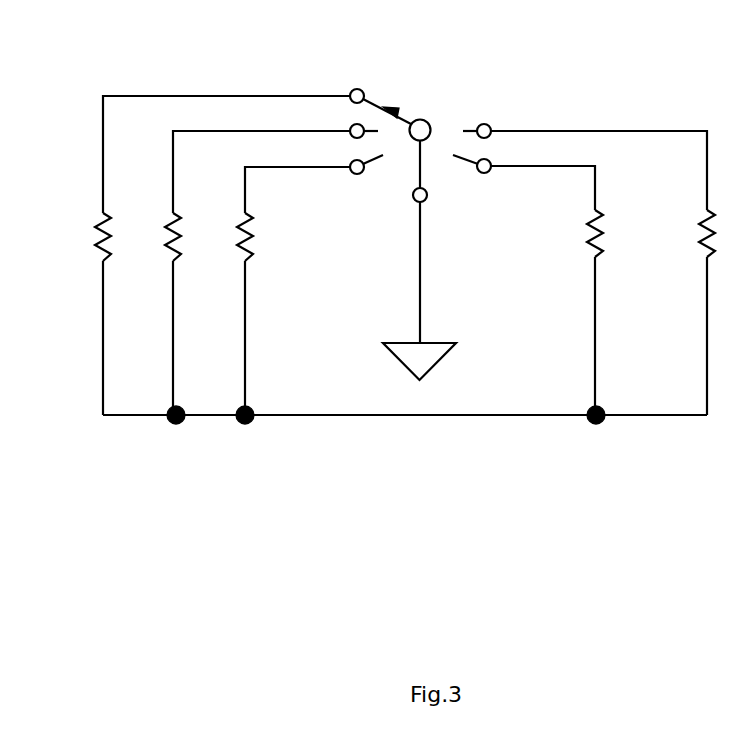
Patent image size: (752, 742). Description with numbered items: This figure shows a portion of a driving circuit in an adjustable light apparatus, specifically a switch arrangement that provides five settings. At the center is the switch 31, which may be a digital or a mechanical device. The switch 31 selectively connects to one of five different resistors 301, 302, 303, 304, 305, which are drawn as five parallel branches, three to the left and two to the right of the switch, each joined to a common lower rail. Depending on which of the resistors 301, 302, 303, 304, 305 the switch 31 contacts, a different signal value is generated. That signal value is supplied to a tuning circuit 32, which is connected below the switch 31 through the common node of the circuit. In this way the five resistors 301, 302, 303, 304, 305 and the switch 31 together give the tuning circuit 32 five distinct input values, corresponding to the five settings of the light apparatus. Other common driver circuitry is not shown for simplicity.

The switch 31 is at (431, 129).
The tuning circuit 32 is at (429, 297).
The resistor 301 is at (97, 225).
The resistor 302 is at (167, 227).
The resistor 303 is at (241, 227).
The resistor 304 is at (593, 229).
The resistor 305 is at (712, 238).